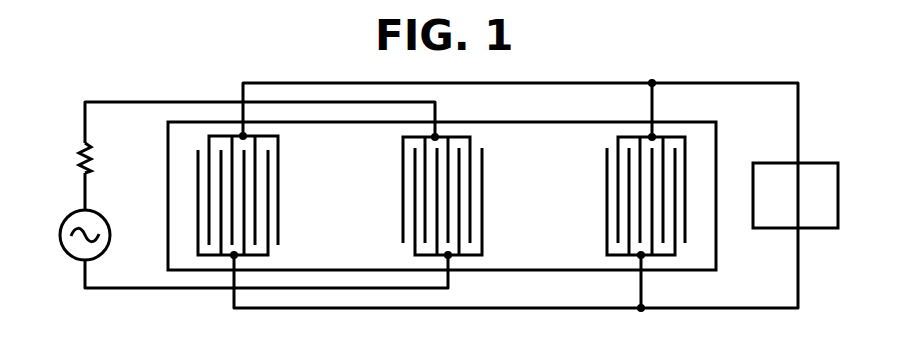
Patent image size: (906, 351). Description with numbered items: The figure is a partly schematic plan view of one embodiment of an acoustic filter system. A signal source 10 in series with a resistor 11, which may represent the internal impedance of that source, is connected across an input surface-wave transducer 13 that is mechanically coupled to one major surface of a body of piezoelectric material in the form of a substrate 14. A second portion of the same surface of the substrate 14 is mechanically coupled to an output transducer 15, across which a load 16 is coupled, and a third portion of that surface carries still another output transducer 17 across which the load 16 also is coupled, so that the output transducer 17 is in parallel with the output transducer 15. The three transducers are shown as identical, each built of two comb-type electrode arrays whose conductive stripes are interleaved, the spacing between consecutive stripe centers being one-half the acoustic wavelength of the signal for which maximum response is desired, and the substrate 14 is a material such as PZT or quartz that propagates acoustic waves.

The signal source 10 is at (70, 217).
The resistor 11 is at (81, 150).
The input surface-wave transducer 13 is at (402, 225).
The substrate 14 is at (717, 238).
The output transducer 15 is at (605, 173).
The load 16 is at (818, 163).
The output transducer 17 is at (280, 170).